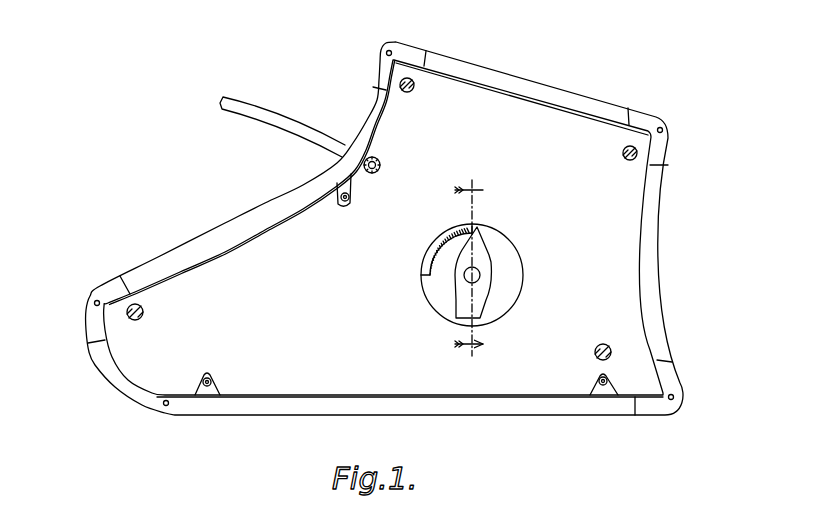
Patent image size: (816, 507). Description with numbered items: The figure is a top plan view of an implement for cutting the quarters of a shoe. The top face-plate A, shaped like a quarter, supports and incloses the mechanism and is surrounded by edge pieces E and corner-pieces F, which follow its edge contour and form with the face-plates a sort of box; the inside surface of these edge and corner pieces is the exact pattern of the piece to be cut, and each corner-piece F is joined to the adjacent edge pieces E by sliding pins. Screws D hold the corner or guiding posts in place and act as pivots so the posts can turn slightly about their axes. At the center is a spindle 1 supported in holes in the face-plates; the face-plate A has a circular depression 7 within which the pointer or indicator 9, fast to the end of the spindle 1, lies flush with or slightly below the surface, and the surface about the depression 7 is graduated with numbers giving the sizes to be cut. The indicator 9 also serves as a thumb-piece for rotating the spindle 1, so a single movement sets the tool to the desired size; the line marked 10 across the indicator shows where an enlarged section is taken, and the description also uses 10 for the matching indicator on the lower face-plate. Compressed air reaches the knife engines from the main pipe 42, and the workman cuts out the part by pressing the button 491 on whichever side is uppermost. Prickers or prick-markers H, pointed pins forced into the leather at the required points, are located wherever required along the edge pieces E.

The spindle 1 is at (481, 273).
The circular depression 7 is at (512, 279).
The pointer or indicator 9 is at (461, 271).
The pointer or indicator 10 is at (469, 269).
The main pipe 42 is at (258, 110).
The button 491 is at (371, 158).
The top face-plate A is at (287, 307).
The screws D is at (401, 81).
The edge pieces E is at (473, 65).
The corner-pieces F is at (394, 41).
The prickers or prick-markers H is at (344, 192).